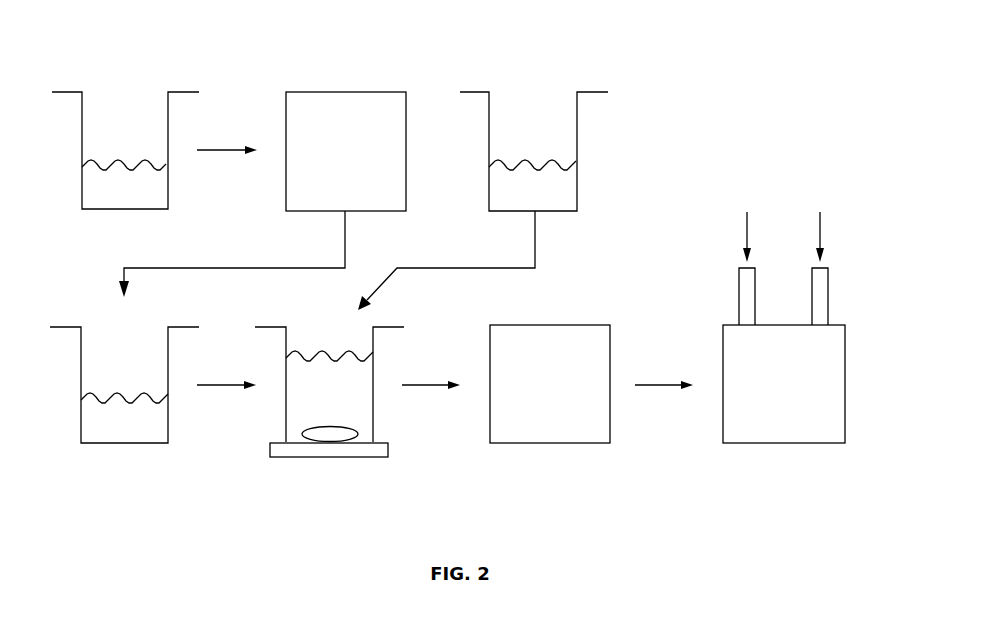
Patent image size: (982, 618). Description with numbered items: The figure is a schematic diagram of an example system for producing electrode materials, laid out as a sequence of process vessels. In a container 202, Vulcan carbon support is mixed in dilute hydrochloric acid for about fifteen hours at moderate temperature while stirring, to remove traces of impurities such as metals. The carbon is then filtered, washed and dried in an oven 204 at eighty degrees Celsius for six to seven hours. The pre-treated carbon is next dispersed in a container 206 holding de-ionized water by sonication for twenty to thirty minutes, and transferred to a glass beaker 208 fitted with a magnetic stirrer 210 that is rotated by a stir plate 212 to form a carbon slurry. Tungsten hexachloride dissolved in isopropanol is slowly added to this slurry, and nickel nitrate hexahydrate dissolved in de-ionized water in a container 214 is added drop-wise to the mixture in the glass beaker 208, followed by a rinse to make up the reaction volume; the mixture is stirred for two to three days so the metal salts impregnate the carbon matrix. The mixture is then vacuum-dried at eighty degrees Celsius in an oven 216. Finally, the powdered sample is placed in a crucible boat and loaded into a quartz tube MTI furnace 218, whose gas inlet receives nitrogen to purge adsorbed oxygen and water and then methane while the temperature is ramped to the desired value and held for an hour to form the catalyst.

The container 202 is at (115, 88).
The oven 204 is at (346, 151).
The container 206 is at (106, 321).
The glass beaker 208 is at (312, 321).
The magnetic stirrer 210 is at (330, 442).
The stir plate 212 is at (342, 457).
The container 214 is at (516, 88).
The oven 216 is at (550, 384).
The quartz tube MTI furnace 218 is at (784, 318).